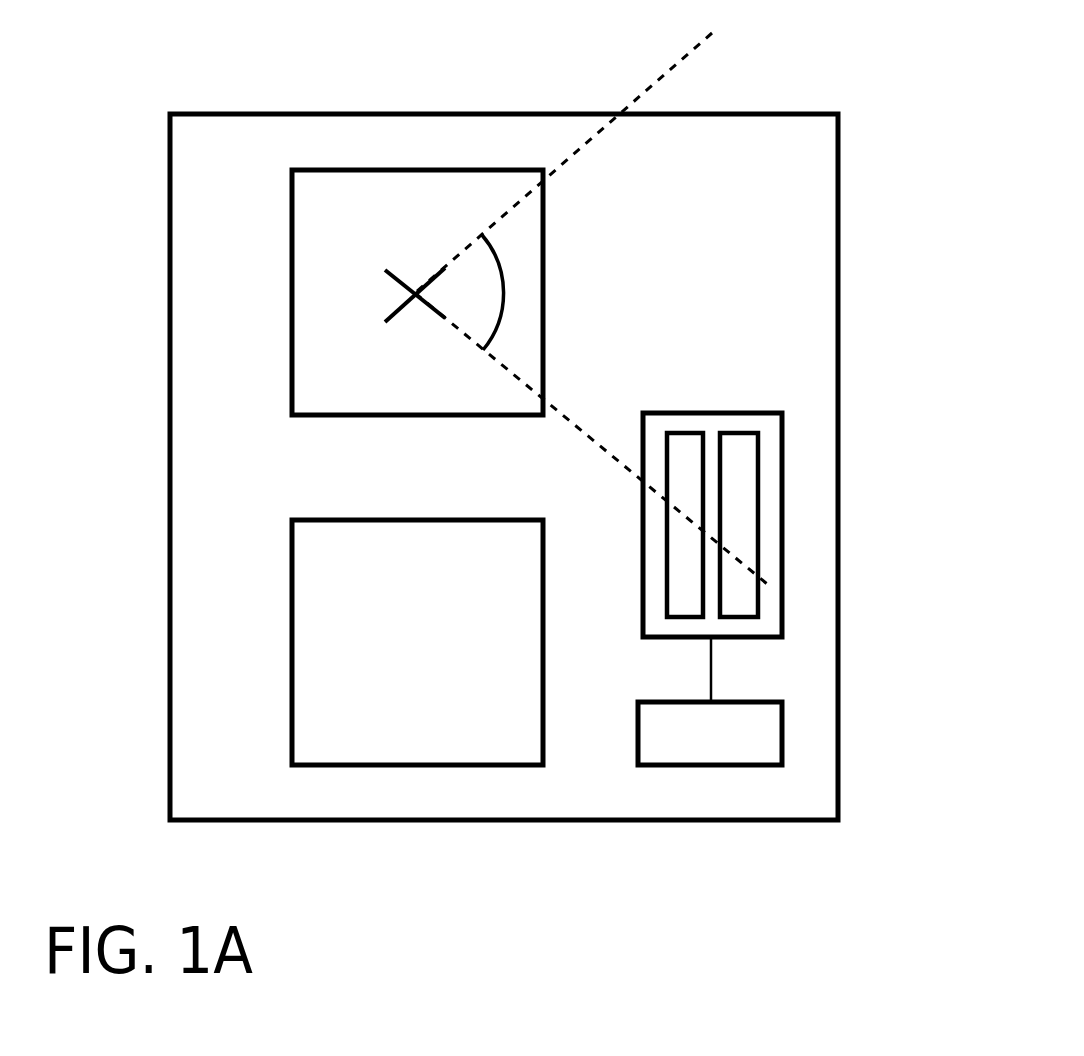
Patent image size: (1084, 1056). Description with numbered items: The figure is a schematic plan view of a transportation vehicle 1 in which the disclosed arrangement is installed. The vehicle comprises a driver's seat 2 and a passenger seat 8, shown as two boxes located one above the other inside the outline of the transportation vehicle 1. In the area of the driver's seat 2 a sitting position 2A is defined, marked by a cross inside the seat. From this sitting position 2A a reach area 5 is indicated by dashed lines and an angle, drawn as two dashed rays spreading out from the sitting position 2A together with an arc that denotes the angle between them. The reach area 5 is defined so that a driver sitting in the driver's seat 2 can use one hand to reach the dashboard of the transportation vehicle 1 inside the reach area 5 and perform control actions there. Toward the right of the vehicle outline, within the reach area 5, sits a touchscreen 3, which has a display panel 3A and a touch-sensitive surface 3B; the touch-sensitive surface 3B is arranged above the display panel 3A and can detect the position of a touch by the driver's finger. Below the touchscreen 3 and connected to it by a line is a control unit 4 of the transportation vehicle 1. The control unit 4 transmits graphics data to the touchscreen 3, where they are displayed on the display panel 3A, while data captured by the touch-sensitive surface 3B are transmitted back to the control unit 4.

The transportation vehicle 1 is at (798, 114).
The driver's seat 2 is at (455, 170).
The sitting position 2A is at (402, 271).
The touchscreen 3 is at (780, 473).
The display panel 3A is at (757, 450).
The touch-sensitive surface 3B is at (682, 433).
The control unit 4 is at (698, 765).
The reach area 5 is at (522, 268).
The passenger seat 8 is at (393, 765).